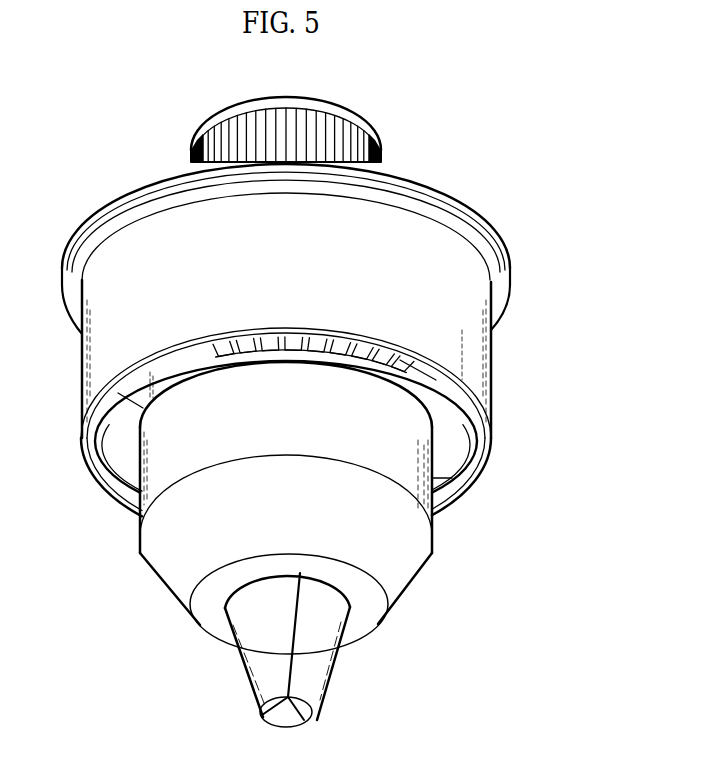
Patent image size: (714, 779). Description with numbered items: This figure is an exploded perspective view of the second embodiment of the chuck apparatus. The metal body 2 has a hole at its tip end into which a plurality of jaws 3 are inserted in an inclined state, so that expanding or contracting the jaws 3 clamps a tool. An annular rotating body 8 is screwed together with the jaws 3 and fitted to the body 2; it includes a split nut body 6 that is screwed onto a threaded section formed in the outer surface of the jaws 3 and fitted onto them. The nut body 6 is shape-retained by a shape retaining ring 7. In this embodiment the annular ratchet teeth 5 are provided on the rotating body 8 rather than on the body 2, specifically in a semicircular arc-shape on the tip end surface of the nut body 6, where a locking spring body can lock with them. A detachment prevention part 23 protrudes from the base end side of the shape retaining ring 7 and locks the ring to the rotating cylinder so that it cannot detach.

The body 2 is at (163, 552).
The jaws 3 is at (263, 690).
The ratchet teeth 5 is at (328, 342).
The nut body 6 is at (127, 415).
The shape retaining ring 7 is at (467, 325).
The rotating body 8 is at (497, 410).
The detachment prevention part 23 is at (477, 209).